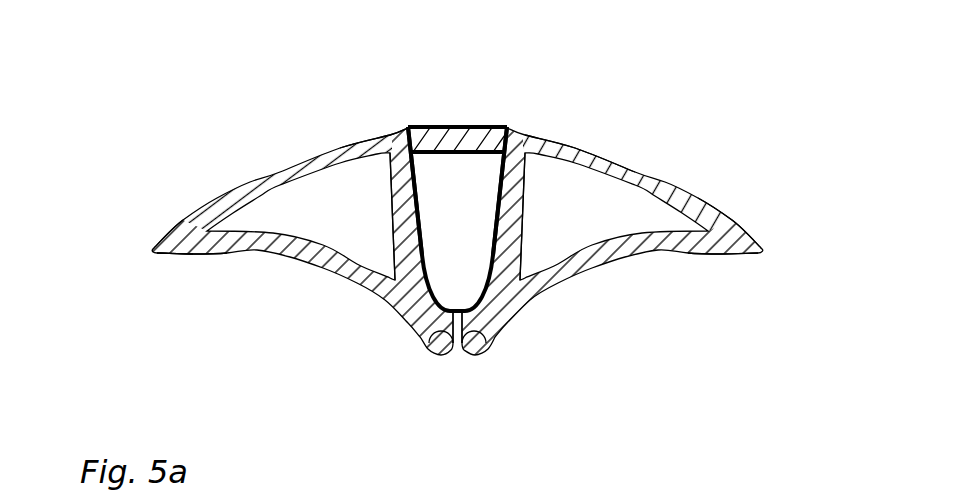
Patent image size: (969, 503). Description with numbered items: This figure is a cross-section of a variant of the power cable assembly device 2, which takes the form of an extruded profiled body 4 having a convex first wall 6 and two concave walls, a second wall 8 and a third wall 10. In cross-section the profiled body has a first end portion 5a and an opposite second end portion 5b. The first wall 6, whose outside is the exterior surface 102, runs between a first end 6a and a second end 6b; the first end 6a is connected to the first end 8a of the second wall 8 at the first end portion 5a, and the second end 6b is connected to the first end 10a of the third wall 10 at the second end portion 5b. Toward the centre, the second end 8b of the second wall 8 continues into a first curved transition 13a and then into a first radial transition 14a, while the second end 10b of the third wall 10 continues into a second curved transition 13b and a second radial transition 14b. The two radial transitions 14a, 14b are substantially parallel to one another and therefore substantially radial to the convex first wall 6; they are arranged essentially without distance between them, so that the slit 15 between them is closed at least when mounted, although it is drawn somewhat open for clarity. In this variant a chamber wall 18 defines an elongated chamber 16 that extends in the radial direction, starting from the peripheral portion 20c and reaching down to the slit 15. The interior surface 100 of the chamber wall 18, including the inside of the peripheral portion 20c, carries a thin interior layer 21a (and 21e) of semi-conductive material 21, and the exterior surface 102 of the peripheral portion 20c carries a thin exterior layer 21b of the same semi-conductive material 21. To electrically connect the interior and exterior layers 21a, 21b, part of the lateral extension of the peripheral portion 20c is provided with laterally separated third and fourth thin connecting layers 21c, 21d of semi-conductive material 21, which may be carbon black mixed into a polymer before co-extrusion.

The power cable assembly device 2 is at (349, 76).
The extruded profiled body 4 is at (568, 71).
The first end portion 5a is at (152, 250).
The second end portion 5b is at (765, 252).
The first wall 6 is at (655, 170).
The first end of the first wall 6a is at (183, 214).
The second end of the first wall 6b is at (745, 226).
The second wall 8 is at (267, 251).
The first end of the second wall 8a is at (193, 255).
The second end of the second wall 8b is at (400, 316).
The third wall 10 is at (621, 256).
The first end of the third wall 10a is at (733, 257).
The second end of the third wall 10b is at (516, 318).
The first curved transition 13a is at (440, 357).
The second curved transition 13b is at (470, 357).
The first radial transition 14a is at (432, 352).
The second radial transition 14b is at (485, 352).
The slit 15 is at (456, 309).
The elongated chamber 16 is at (473, 237).
The chamber wall 18 is at (418, 219).
The interior surface 100 is at (497, 228).
The exterior surface 102 is at (615, 145).
The peripheral portion 20c is at (453, 138).
The semi-conductive material 21 is at (478, 100).
The thin interior layer 21a is at (397, 286).
The thin exterior layer 21b is at (420, 126).
The third thin connecting layer 21c is at (398, 142).
The fourth thin connecting layer 21d is at (538, 128).
The thin interior layer 21e is at (462, 153).